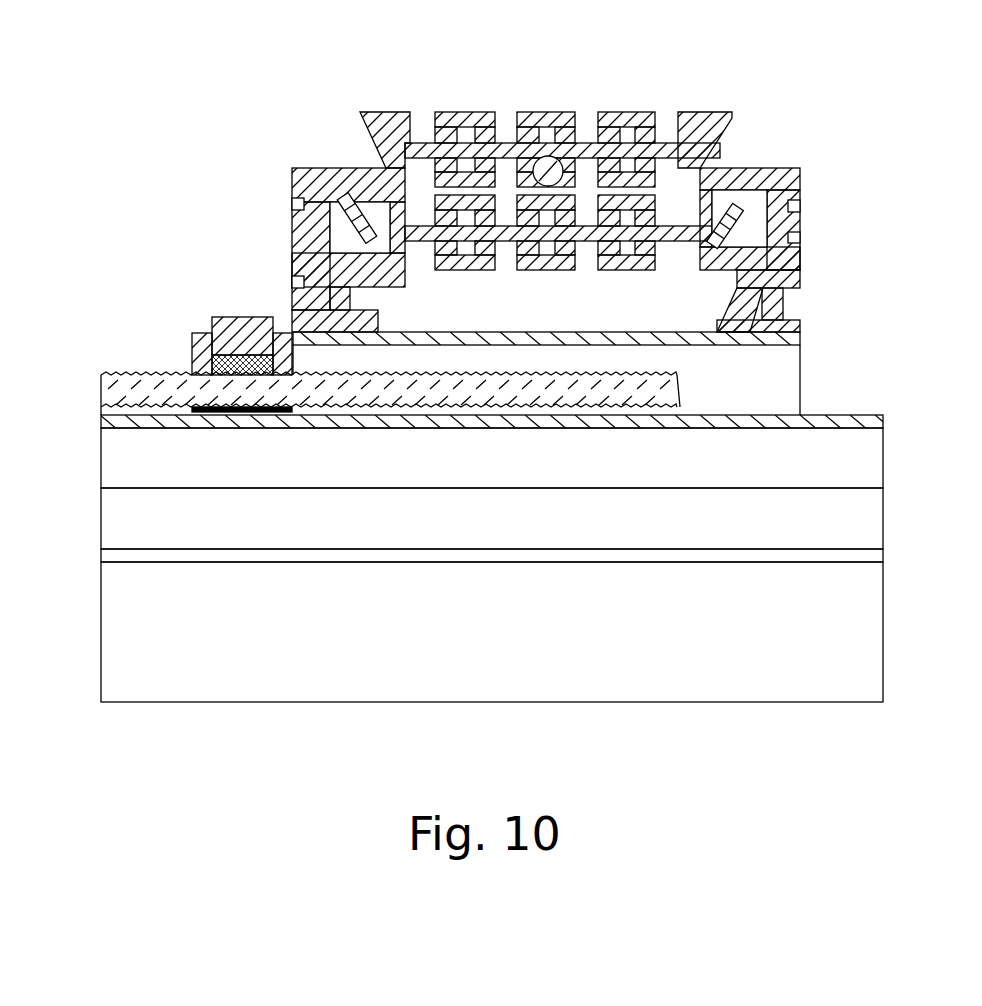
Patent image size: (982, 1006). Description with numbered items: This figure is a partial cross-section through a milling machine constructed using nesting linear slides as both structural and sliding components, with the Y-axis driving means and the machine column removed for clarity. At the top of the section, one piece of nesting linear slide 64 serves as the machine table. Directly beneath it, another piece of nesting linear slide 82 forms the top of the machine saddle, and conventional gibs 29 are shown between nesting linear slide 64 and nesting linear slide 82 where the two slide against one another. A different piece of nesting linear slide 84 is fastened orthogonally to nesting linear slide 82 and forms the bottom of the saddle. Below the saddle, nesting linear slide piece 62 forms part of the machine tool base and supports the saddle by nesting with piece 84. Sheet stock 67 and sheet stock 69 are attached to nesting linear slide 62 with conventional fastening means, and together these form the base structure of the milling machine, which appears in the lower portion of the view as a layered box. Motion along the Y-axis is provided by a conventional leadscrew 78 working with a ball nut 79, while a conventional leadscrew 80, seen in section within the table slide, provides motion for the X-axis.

The gibs 29 is at (348, 197).
The nesting linear slide piece 62 is at (143, 447).
The nesting linear slide 64 is at (541, 174).
The sheet stock 67 is at (228, 554).
The sheet stock 69 is at (442, 683).
The leadscrew 78 is at (157, 375).
The ball nut 79 is at (200, 342).
The leadscrew 80 is at (557, 159).
The nesting linear slide 82 is at (802, 262).
The nesting linear slide 84 is at (792, 370).